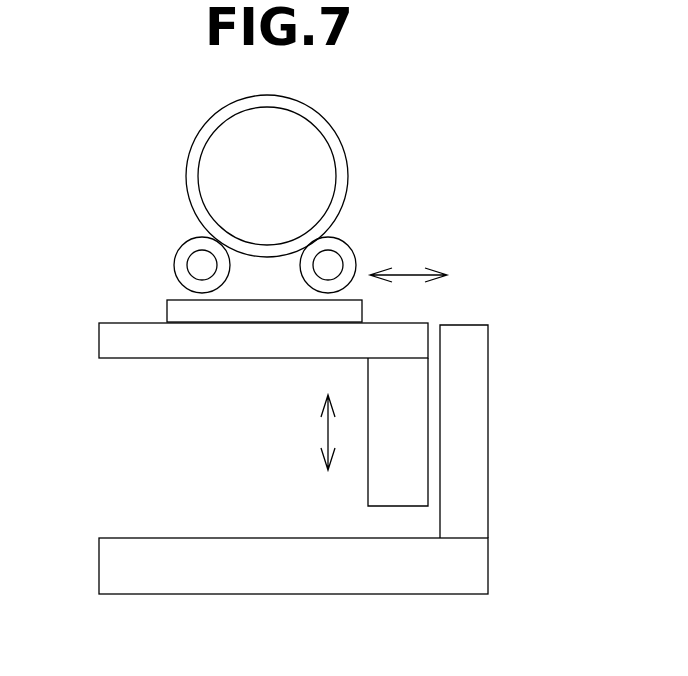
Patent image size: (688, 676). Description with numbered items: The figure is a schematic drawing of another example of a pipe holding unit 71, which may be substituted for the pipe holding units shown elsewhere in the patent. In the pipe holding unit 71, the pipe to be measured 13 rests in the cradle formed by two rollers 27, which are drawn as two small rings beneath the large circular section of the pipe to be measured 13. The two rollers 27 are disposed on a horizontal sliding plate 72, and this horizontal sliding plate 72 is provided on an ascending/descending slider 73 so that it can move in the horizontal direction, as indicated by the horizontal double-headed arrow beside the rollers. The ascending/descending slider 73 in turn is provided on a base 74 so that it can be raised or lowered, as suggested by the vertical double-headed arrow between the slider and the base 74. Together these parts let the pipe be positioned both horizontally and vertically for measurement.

The pipe holding unit 71 is at (78, 131).
The pipe to be measured 13 is at (345, 158).
The rollers 27 is at (185, 243).
The horizontal sliding plate 72 is at (167, 312).
The ascending/descending slider 73 is at (128, 358).
The base 74 is at (488, 470).